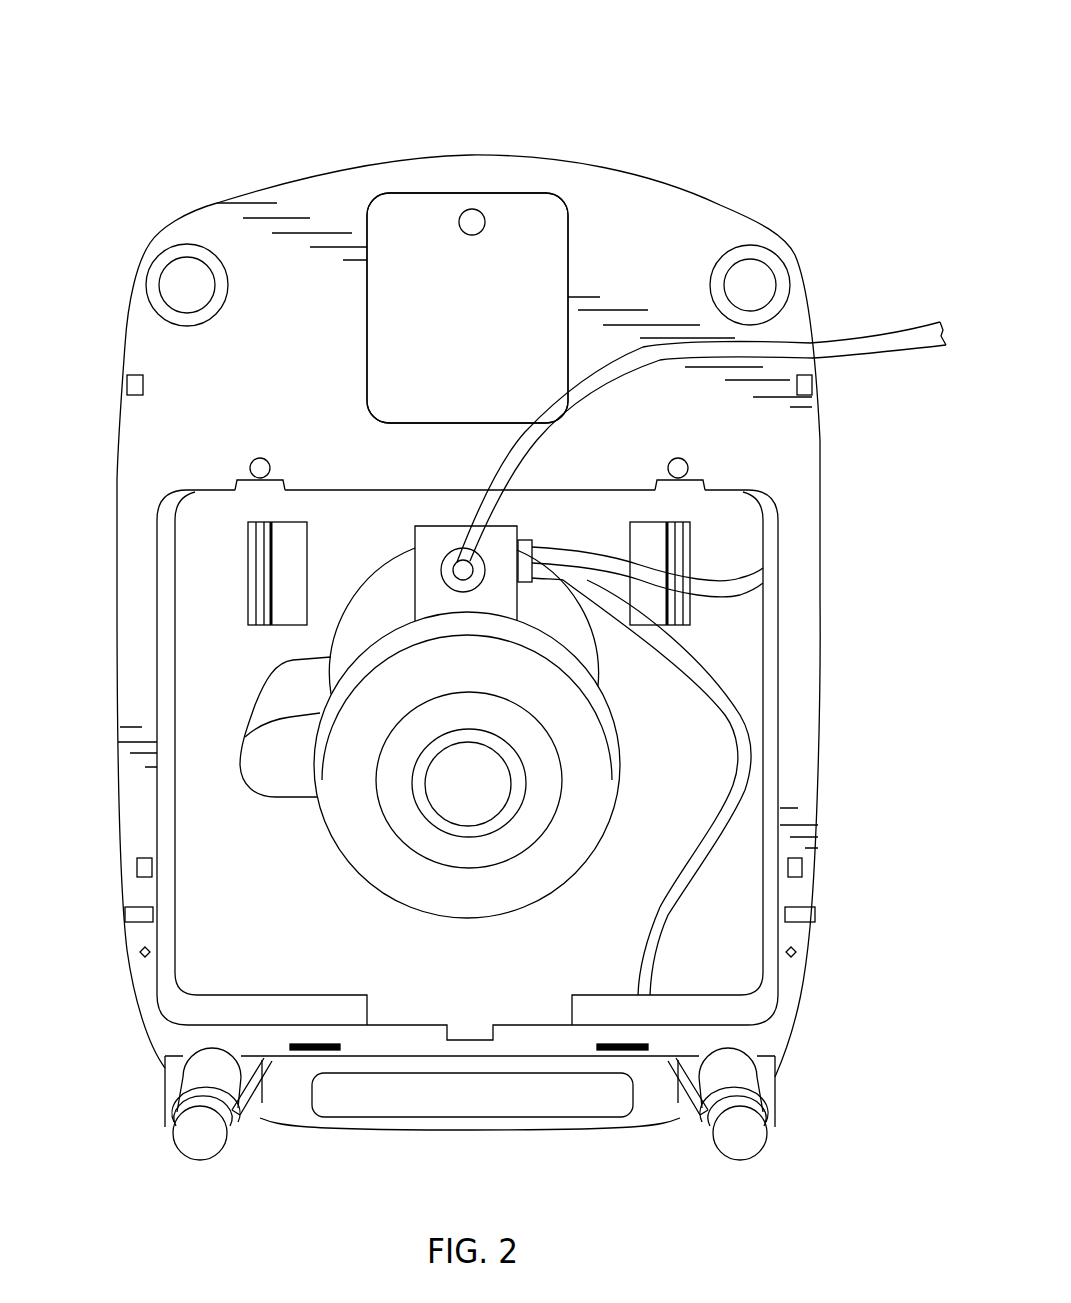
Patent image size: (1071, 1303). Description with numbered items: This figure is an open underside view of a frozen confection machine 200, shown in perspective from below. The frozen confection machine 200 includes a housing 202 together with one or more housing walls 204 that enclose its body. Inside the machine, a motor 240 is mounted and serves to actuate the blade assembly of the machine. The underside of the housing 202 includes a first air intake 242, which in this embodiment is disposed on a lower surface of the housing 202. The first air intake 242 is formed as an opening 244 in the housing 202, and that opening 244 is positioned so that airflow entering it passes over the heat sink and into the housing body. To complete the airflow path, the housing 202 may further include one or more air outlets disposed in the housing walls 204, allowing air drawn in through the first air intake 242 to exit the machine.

The frozen confection machine 200 is at (140, 48).
The housing 202 is at (795, 977).
The housing wall 204 is at (820, 760).
The motor 240 is at (587, 745).
The first air intake 242 is at (493, 265).
The opening 244 is at (570, 252).